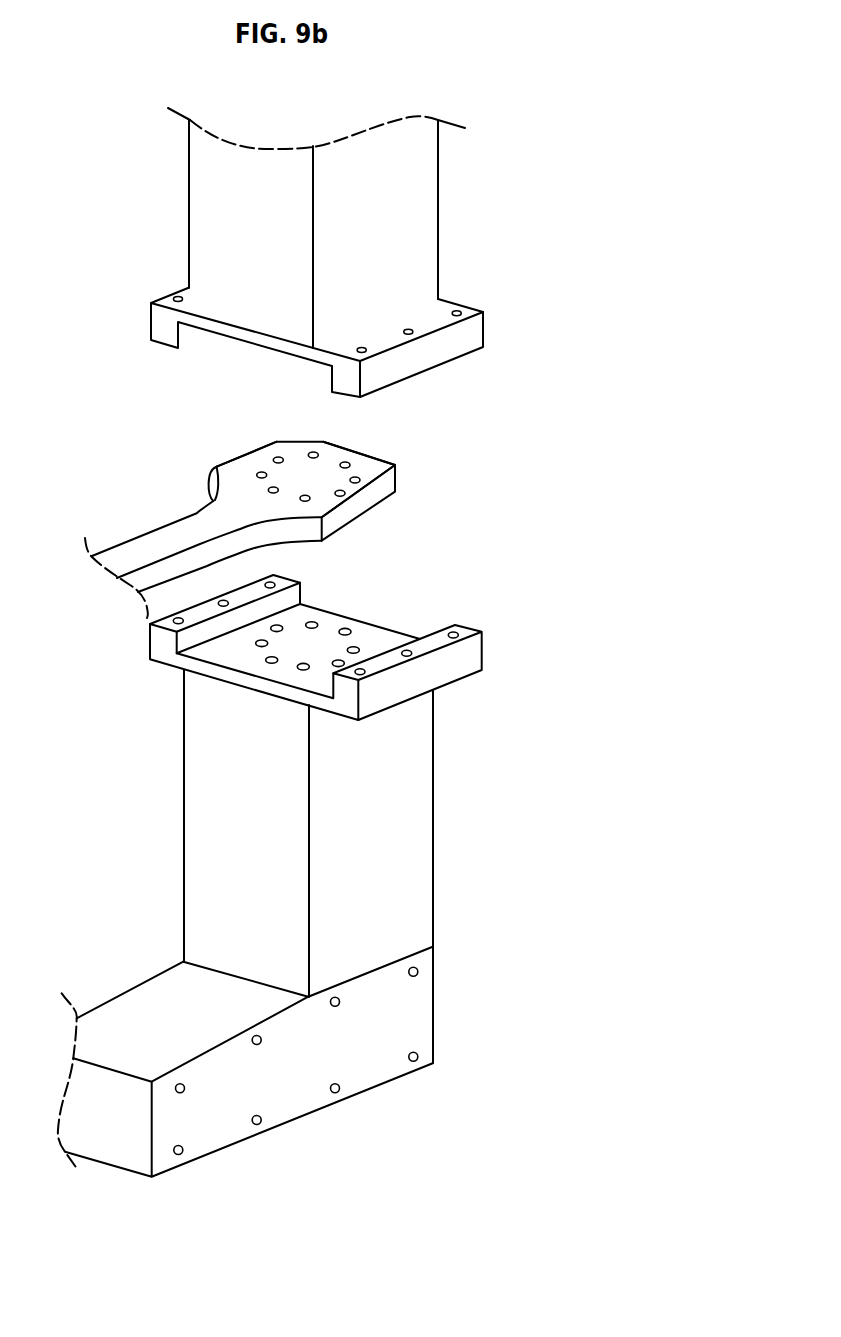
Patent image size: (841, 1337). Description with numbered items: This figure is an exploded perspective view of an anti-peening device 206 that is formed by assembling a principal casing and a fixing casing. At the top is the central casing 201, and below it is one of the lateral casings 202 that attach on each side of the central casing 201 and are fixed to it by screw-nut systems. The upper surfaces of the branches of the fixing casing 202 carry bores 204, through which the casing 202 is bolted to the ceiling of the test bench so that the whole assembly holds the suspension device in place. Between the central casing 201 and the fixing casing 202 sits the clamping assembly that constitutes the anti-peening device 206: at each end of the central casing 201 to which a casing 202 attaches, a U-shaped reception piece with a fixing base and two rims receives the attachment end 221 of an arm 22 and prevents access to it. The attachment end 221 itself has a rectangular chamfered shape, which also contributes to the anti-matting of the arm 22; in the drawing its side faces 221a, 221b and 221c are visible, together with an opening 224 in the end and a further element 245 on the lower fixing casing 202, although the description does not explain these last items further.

The central casing 201 is at (412, 208).
The lateral casing 202 is at (403, 818).
The bore 204 is at (453, 308).
The anti-peening device 206 is at (437, 352).
The arm 22 is at (158, 543).
The attachment end 221 is at (250, 485).
The plate side face 221a is at (363, 517).
The plate edge 221b is at (363, 452).
The plate edge 221c is at (248, 453).
The hole 224 is at (313, 453).
The base block 245 is at (417, 1061).